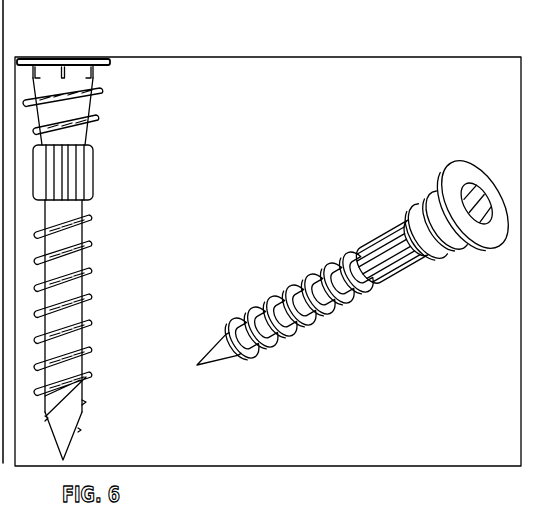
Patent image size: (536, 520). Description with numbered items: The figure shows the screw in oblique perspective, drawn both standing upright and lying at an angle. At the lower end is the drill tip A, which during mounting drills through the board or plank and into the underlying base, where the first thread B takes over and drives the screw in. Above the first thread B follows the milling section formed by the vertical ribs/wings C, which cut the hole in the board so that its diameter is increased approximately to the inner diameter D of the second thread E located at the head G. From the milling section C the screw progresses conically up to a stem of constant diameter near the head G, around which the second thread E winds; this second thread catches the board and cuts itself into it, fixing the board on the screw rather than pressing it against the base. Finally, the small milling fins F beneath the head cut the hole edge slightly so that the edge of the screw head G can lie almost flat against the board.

The drill tip A is at (190, 376).
The first thread B is at (252, 298).
The vertical ribs/wings C is at (353, 234).
The inner diameter of the second thread D is at (102, 106).
The second thread E is at (409, 198).
The milling fins F is at (111, 73).
The screw head G is at (436, 163).